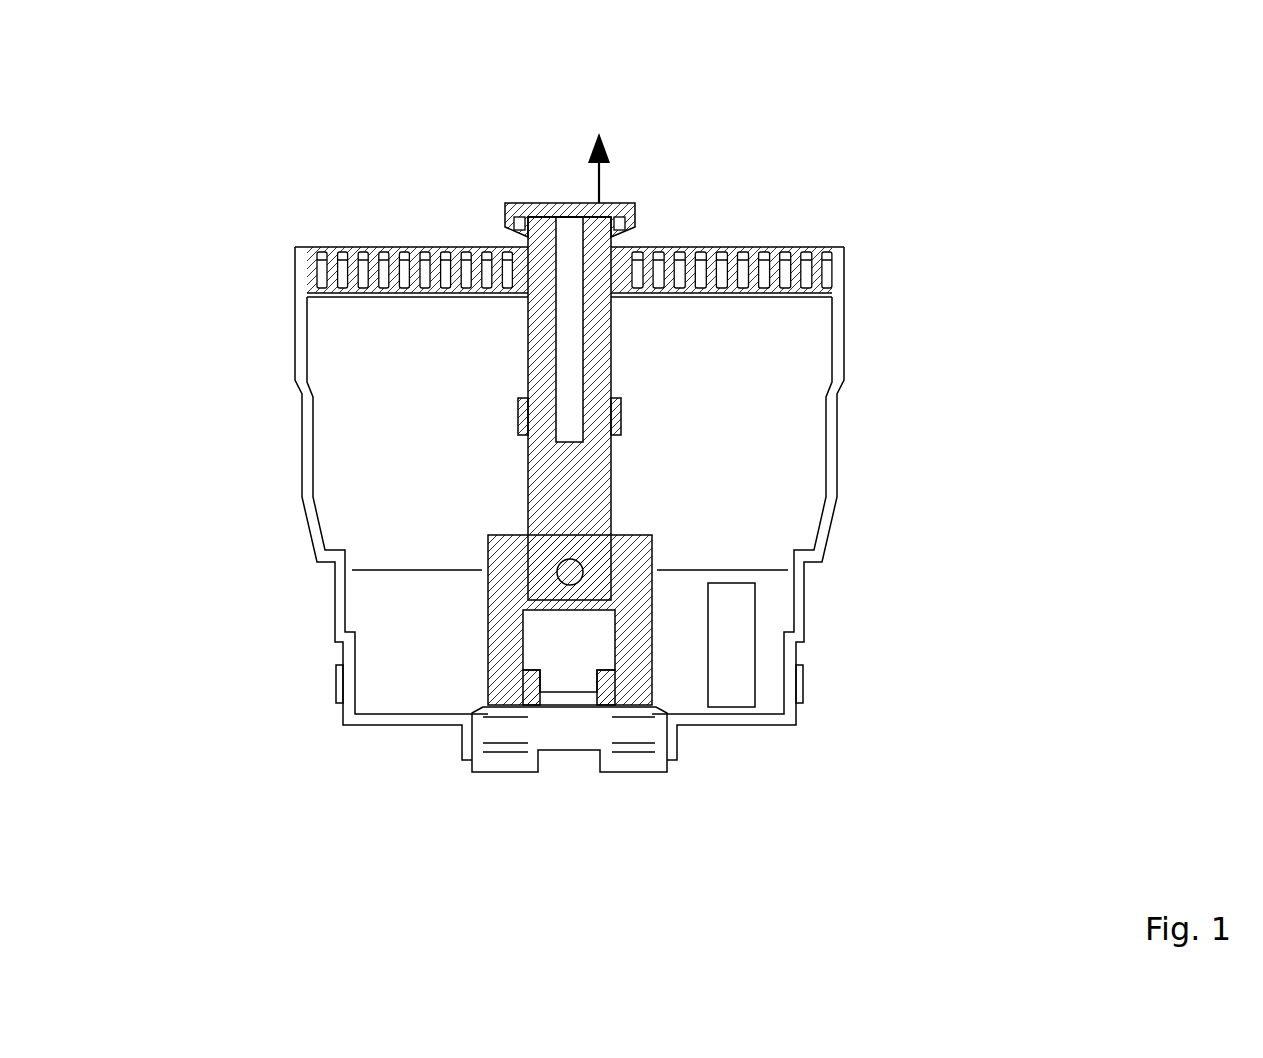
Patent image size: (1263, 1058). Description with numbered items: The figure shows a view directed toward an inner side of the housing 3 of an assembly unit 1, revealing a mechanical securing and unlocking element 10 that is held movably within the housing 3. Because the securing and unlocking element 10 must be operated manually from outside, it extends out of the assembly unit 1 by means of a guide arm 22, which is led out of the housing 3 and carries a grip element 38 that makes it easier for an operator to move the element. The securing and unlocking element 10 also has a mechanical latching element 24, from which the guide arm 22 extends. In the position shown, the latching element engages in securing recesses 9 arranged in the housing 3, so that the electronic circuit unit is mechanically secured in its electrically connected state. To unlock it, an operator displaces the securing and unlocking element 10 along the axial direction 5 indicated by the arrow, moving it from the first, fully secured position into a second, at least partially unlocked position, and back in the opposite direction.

The assembly unit 1 is at (232, 213).
The housing 3 is at (348, 720).
The direction 5 is at (602, 182).
The securing recesses 9 is at (542, 668).
The mechanical securing and unlocking element 10 is at (542, 473).
The guide arm 22 is at (598, 365).
The mechanical latching element 24 is at (538, 708).
The grip element 38 is at (543, 207).